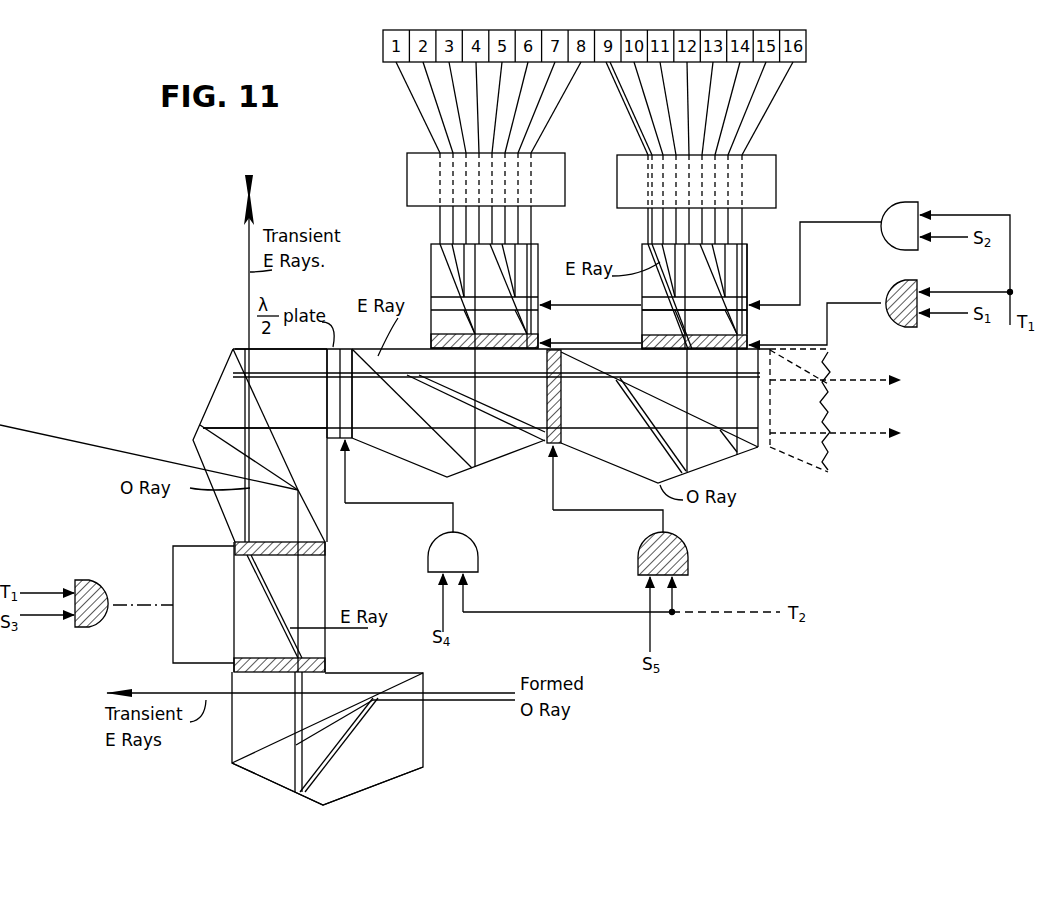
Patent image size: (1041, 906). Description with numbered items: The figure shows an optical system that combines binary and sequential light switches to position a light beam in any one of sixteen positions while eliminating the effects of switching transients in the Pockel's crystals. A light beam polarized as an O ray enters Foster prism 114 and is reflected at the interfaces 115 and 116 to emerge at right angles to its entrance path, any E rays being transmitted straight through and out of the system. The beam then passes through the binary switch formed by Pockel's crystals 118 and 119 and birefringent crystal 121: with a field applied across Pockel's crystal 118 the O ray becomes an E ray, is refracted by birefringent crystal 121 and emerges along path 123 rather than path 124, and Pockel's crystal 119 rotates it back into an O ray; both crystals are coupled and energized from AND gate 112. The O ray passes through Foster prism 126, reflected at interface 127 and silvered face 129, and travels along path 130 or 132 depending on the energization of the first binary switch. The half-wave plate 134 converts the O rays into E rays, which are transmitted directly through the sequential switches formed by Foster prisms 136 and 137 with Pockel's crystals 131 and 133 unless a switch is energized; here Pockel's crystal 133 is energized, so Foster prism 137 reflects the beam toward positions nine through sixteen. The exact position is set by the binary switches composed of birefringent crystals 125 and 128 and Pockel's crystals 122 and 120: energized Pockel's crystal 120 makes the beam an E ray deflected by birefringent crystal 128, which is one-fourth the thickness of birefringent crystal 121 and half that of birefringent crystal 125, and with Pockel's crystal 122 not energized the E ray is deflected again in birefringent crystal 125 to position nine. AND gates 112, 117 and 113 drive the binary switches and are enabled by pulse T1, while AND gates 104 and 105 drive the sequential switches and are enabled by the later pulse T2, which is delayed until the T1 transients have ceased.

The AND gate 104 is at (470, 563).
The AND gate 105 is at (676, 565).
The AND gate 112 is at (118, 578).
The AND gate 113 is at (880, 215).
The Foster prism 114 is at (418, 740).
The interface 115 is at (393, 690).
The interface 116 is at (270, 782).
The AND gate 117 is at (892, 284).
The Pockel's crystal 118 is at (325, 668).
The Pockel's crystal 119 is at (325, 548).
The Pockel's crystal 120 is at (748, 337).
The birefringent crystal 121 is at (318, 582).
The Pockel's crystal 122 is at (748, 298).
The path 123 is at (232, 552).
The path 124 is at (300, 553).
The birefringent crystal 125 is at (748, 272).
The Foster prism 126 is at (213, 463).
The interface 127 is at (248, 407).
The birefringent crystal 128 is at (748, 318).
The silvered face 129 is at (233, 376).
The path 130 is at (300, 378).
The Pockel's crystal 131 is at (350, 434).
The path 132 is at (307, 401).
The Pockel's crystal 133 is at (562, 445).
The half-wave plate 134 is at (337, 385).
The Foster prism 136 is at (490, 455).
The Foster prism 137 is at (720, 455).